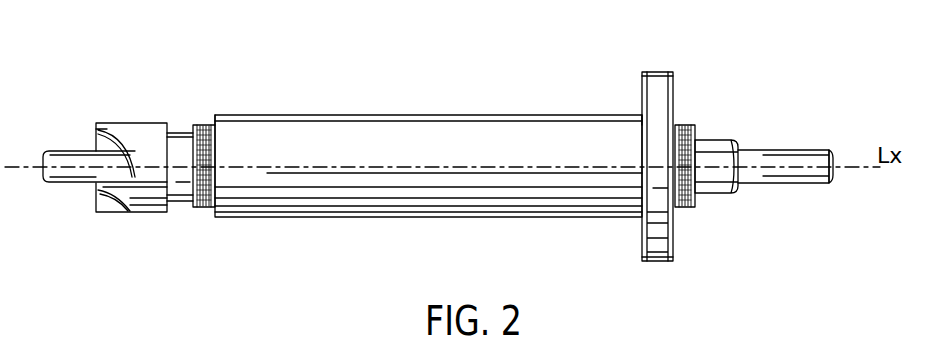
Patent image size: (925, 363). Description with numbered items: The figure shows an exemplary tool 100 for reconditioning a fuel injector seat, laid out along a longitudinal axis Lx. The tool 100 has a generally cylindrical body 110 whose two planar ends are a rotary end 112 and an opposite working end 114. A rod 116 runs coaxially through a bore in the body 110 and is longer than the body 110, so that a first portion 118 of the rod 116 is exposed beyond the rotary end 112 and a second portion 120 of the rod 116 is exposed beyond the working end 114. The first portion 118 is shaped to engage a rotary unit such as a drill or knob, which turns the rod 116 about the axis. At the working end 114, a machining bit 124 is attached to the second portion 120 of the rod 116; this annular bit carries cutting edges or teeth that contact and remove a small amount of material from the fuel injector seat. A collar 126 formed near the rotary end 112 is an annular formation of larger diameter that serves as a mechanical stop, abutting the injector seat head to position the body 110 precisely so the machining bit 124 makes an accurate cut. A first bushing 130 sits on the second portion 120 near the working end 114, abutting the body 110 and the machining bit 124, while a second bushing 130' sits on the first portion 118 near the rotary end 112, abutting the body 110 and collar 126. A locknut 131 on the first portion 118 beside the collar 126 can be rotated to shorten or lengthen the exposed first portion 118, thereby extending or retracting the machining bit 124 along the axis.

The tool 100 is at (433, 81).
The body 110 is at (407, 218).
The rotary end 112 is at (636, 114).
The working end 114 is at (216, 114).
The rod 116 is at (777, 150).
The first portion 118 is at (835, 179).
The second portion 120 is at (68, 150).
The machining bit 124 is at (146, 213).
The collar 126 is at (641, 240).
The first bushing 130 is at (229, 218).
The second bushing 130' is at (713, 130).
The locknut 131 is at (717, 194).